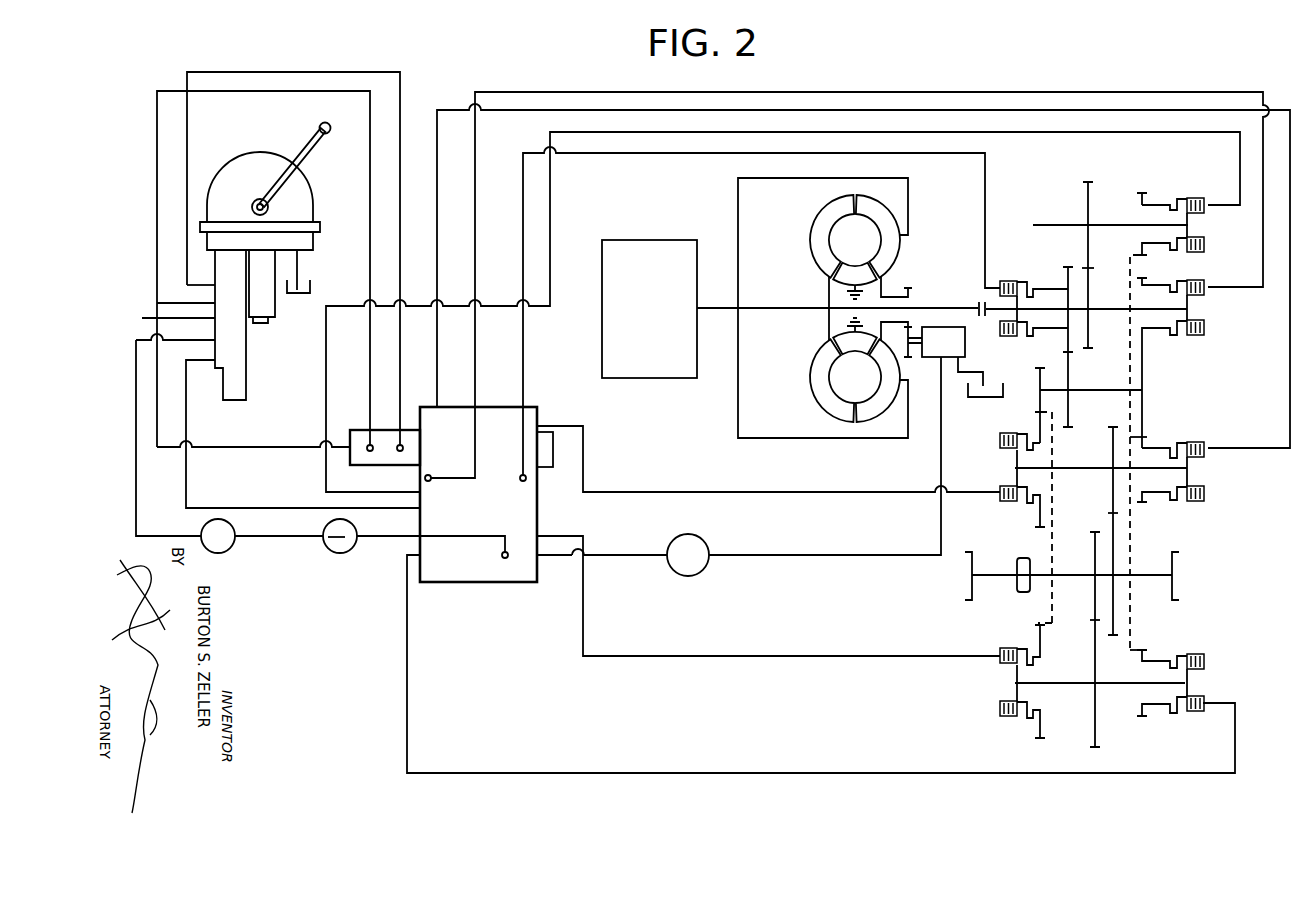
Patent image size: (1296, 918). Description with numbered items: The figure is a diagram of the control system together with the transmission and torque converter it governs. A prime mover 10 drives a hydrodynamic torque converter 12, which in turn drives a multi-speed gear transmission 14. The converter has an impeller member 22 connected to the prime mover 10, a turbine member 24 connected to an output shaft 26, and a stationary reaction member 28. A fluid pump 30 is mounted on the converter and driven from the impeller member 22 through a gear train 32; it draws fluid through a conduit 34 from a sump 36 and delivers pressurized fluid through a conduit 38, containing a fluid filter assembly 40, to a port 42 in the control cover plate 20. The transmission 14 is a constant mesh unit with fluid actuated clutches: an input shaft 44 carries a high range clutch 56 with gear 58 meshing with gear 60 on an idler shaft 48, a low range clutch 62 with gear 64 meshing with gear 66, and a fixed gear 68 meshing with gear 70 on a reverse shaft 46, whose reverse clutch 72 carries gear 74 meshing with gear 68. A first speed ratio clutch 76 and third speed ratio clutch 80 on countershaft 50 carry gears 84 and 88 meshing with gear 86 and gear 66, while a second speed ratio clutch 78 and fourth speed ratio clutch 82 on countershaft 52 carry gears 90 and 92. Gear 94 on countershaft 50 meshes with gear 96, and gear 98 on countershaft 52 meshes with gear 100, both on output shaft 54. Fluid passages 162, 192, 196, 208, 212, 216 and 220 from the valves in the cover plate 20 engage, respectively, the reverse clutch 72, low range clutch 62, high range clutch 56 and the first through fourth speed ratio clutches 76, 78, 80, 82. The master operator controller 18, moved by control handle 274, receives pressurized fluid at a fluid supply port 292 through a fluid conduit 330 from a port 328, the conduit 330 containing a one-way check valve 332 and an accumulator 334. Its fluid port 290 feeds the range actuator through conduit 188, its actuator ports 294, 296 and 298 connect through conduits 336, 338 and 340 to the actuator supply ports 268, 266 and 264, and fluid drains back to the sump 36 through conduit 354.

The prime mover 10 is at (634, 240).
The hydrodynamic torque converter 12 is at (811, 331).
The multi-speed gear transmission 14 is at (1114, 447).
The master operator controller 18 is at (226, 160).
The control cover plate 20 is at (530, 410).
The impeller member 22 is at (880, 400).
The turbine member 24 is at (826, 402).
The output shaft 26 is at (978, 304).
The stationary reaction member 28 is at (860, 348).
The fluid pump 30 is at (940, 327).
The gear train 32 is at (915, 348).
The conduit 34 is at (986, 376).
The sump 36 is at (310, 284).
The conduit 38 is at (806, 556).
The fluid filter assembly 40 is at (704, 572).
The port 42 is at (538, 576).
The input shaft 44 is at (1004, 306).
The reverse shaft 46 is at (1050, 222).
The idler shaft 48 is at (1105, 390).
The countershaft 50 is at (1072, 468).
The countershaft 52 is at (1065, 683).
The output shaft 54 is at (1056, 575).
The high range clutch 56 is at (1022, 282).
The gear 58 is at (1067, 266).
The gear 60 is at (1070, 418).
The low range clutch 62 is at (1204, 280).
The gear 64 is at (1150, 282).
The gear 66 is at (1148, 376).
The gear 68 is at (1090, 286).
The gear 70 is at (1093, 190).
The reverse clutch 72 is at (1192, 198).
The gear 74 is at (1142, 192).
The first speed ratio clutch 76 is at (1010, 504).
The second speed ratio clutch 78 is at (1008, 646).
The third speed ratio clutch 80 is at (1196, 442).
The fourth speed ratio clutch 82 is at (1194, 654).
The gear 84 is at (1034, 432).
The gear 86 is at (1042, 372).
The gear 88 is at (1148, 437).
The gear 90 is at (1033, 722).
The gear 92 is at (1144, 650).
The gear 94 is at (1116, 436).
The gear 96 is at (1110, 514).
The gear 98 is at (1095, 705).
The gear 100 is at (1095, 592).
The fluid passage 162 is at (326, 357).
The fluid conduit 188 is at (186, 486).
The fluid passage 192 is at (475, 368).
The fluid passage 196 is at (523, 342).
The fluid passage 208 is at (583, 470).
The fluid passage 212 is at (583, 542).
The fluid passage 216 is at (437, 352).
The fluid passage 220 is at (407, 620).
The fluid supply port 264 is at (399, 440).
The fluid supply port 266 is at (366, 440).
The fluid supply port 268 is at (382, 460).
The control handle 274 is at (302, 150).
The fluid port 290 is at (215, 368).
The fluid supply port 292 is at (150, 341).
The fluid actuator port 294 is at (159, 317).
The fluid actuator port 296 is at (157, 303).
The fluid actuator port 298 is at (186, 284).
The port 328 is at (500, 555).
The fluid conduit 330 is at (136, 495).
The one-way check valve 332 is at (342, 553).
The accumulator 334 is at (230, 552).
The fluid conduit 336 is at (221, 447).
The fluid conduit 338 is at (157, 206).
The fluid conduit 340 is at (206, 48).
The fluid conduit 354 is at (300, 275).